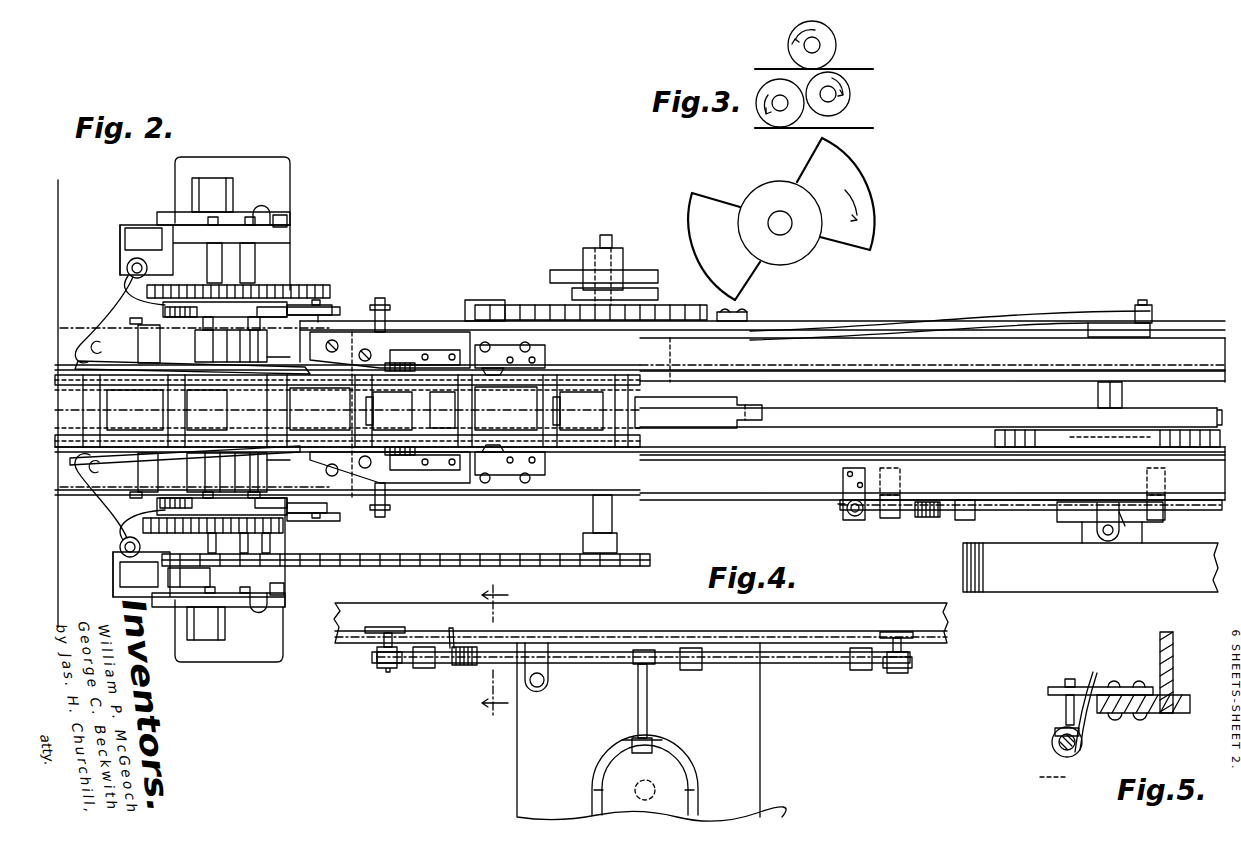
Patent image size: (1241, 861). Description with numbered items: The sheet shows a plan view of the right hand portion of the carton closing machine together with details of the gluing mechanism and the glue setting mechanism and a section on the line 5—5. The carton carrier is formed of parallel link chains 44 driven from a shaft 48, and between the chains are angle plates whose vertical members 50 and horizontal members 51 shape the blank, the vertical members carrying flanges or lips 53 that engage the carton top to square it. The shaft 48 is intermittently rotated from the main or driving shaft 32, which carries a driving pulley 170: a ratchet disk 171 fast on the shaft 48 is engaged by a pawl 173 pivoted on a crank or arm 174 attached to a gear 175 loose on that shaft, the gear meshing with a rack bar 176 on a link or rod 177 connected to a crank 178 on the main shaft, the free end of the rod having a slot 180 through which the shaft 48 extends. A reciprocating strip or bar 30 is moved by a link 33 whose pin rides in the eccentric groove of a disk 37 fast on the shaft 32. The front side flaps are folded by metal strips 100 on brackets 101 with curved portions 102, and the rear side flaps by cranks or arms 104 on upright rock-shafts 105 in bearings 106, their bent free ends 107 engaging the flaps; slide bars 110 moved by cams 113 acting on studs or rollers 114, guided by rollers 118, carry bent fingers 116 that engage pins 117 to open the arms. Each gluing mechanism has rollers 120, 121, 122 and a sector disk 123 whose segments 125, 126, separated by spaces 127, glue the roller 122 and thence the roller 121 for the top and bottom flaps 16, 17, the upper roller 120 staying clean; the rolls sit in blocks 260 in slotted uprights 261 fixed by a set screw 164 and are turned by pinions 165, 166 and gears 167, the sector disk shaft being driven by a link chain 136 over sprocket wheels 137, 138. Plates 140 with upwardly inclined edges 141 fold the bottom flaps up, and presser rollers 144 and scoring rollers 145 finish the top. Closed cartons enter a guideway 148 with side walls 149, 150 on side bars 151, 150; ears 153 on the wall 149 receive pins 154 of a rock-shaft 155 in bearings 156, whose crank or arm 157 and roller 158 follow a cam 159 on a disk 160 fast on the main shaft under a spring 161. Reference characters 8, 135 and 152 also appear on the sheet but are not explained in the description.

In FIG. 4, the section line 5— 5 is at (495, 650).
In FIG. 2, the frame 8 is at (645, 403).
In FIG. 3, the top flaps 16 is at (758, 67).
In FIG. 3, the bottom flaps 17 is at (860, 130).
In FIG. 2, the strip or bar 30 is at (715, 428).
In FIG. 2, the main or driving shaft 32 is at (1124, 393).
In FIG. 4, the main or driving shaft 32 is at (638, 782).
In FIG. 2, the link 33 is at (898, 412).
In FIG. 2, the disk 37 is at (995, 436).
In FIG. 2, the link chains 44 is at (590, 376).
In FIG. 2, the shaft 48 is at (604, 237).
In FIG. 2, the vertical member 50 is at (572, 418).
In FIG. 2, the horizontal member 51 is at (321, 410).
In FIG. 2, the flanges or lips 53 is at (347, 411).
In FIG. 2, the metal strips 100 is at (190, 406).
In FIG. 4, the metal strips 100 is at (651, 732).
In FIG. 2, the brackets 101 is at (163, 408).
In FIG. 2, the curved portions 102 is at (112, 345).
In FIG. 2, the cranks or arms 104 is at (110, 300).
In FIG. 2, the upright rock-shafts 105 is at (130, 262).
In FIG. 2, the bearings 106 is at (139, 577).
In FIG. 2, the curved or bent free ends 107 is at (75, 346).
In FIG. 2, the slide bars 110 is at (136, 240).
In FIG. 2, the cams 113 is at (180, 212).
In FIG. 2, the studs or rollers 114 is at (262, 214).
In FIG. 2, the bent fingers or arms 116 is at (124, 228).
In FIG. 2, the projections or pins 117 is at (132, 224).
In FIG. 2, the rollers 118 is at (287, 220).
In FIG. 2, the upper roller 120 is at (264, 345).
In FIG. 3, the upper roller 120 is at (836, 45).
In FIG. 2, the roller 121 is at (287, 415).
In FIG. 3, the roller 121 is at (850, 96).
In FIG. 2, the roller 122 is at (200, 338).
In FIG. 3, the roller 122 is at (762, 110).
In FIG. 3, the sector disk 123 is at (800, 253).
In FIG. 3, the segment 125 is at (868, 222).
In FIG. 3, the segment 126 is at (690, 230).
In FIG. 3, the spaces 127 is at (762, 233).
In FIG. 2, the bolt 135 is at (386, 312).
In FIG. 2, the link chain 136 is at (540, 546).
In FIG. 2, the sprocket wheel 137 is at (182, 565).
In FIG. 2, the sprocket wheel 138 is at (620, 552).
In FIG. 2, the plates 140 is at (350, 355).
In FIG. 2, the upwardly inclined edges 141 is at (318, 350).
In FIG. 2, the presser rollers 144 is at (398, 360).
In FIG. 2, the beveled or scoring rollers 145 is at (488, 368).
In FIG. 2, the guideway 148 is at (965, 385).
In FIG. 2, the side wall 149 is at (742, 468).
In FIG. 4, the side wall 149 is at (836, 612).
In FIG. 2, the side wall 150 is at (792, 370).
In FIG. 5, the side wall 150 is at (1173, 668).
In FIG. 2, the side bars 151 is at (792, 460).
In FIG. 2, the plate 152 is at (796, 381).
In FIG. 5, the plate 152 is at (1154, 703).
In FIG. 2, the ears 153 is at (843, 480).
In FIG. 4, the ears 153 is at (398, 628).
In FIG. 5, the ears 153 is at (1050, 688).
In FIG. 2, the pins 154 is at (852, 516).
In FIG. 4, the pins 154 is at (386, 630).
In FIG. 5, the pins 154 is at (1074, 680).
In FIG. 2, the rock-shaft 155 is at (1002, 511).
In FIG. 4, the rock-shaft 155 is at (578, 664).
In FIG. 5, the rock-shaft 155 is at (1035, 781).
In FIG. 2, the bearings 156 is at (890, 520).
In FIG. 4, the bearings 156 is at (420, 672).
In FIG. 5, the bearings 156 is at (1050, 741).
In FIG. 2, the crank or arm 157 is at (1120, 538).
In FIG. 4, the crank or arm 157 is at (638, 705).
In FIG. 2, the roller 158 is at (1104, 540).
In FIG. 4, the roller 158 is at (655, 742).
In FIG. 4, the cam 159 is at (698, 768).
In FIG. 2, the disk 160 is at (1062, 522).
In FIG. 2, the spring 161 is at (928, 519).
In FIG. 4, the spring 161 is at (458, 670).
In FIG. 5, the spring 161 is at (1099, 713).
In FIG. 2, the set screw 164 is at (138, 326).
In FIG. 2, the pinions 165 is at (200, 292).
In FIG. 2, the pinions 166 is at (313, 428).
In FIG. 2, the gears 167 is at (130, 278).
In FIG. 2, the driving pulley 170 is at (1022, 592).
In FIG. 2, the ratchet disk 171 is at (556, 274).
In FIG. 2, the pawl 173 is at (615, 268).
In FIG. 2, the crank or arm 174 is at (660, 294).
In FIG. 2, the gear 175 is at (590, 312).
In FIG. 2, the rack bar 176 is at (500, 304).
In FIG. 2, the link or rod 177 is at (888, 326).
In FIG. 2, the crank 178 is at (1130, 328).
In FIG. 2, the slot 180 is at (538, 320).
In FIG. 2, the blocks 260 is at (222, 409).
In FIG. 2, the uprights 261 is at (292, 300).